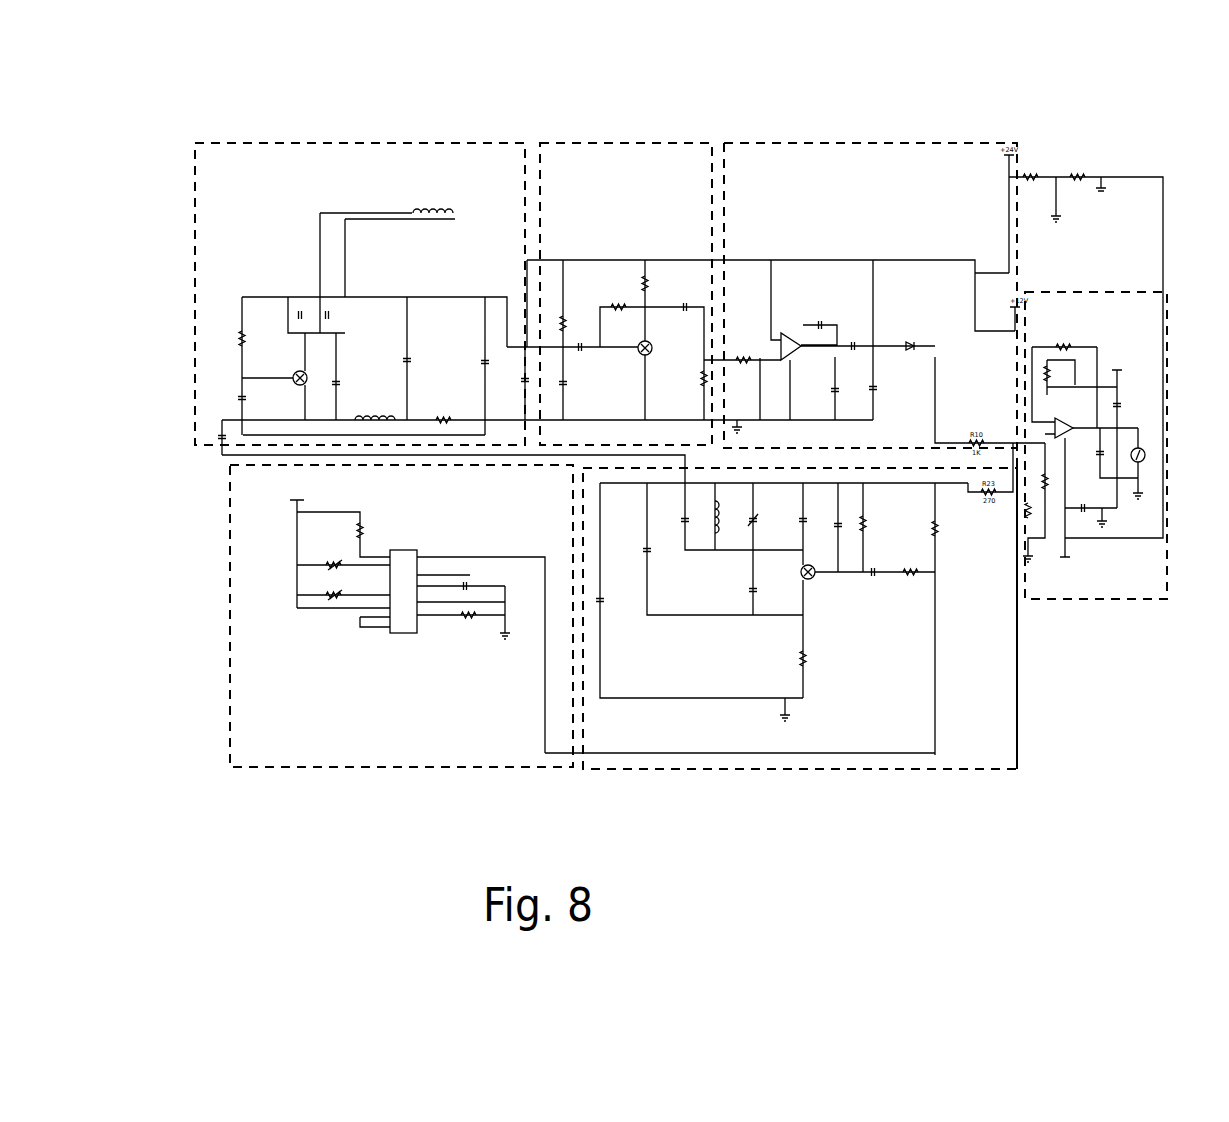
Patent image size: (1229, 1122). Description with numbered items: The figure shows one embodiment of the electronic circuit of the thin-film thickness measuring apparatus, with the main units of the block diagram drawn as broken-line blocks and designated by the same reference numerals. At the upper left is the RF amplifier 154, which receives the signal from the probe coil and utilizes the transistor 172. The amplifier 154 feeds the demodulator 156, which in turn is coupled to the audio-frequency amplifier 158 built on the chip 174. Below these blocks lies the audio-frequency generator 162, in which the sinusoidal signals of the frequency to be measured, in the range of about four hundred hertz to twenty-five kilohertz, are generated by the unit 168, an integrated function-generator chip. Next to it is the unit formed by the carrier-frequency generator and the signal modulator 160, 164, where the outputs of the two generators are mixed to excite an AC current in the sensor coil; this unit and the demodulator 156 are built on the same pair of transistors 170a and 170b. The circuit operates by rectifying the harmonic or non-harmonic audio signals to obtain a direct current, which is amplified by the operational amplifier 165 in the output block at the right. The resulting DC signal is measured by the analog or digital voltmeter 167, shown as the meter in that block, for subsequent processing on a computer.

The amplifier 154 is at (396, 261).
The demodulator 156 is at (660, 252).
The audio-frequency amplifier 158 is at (870, 398).
The carrier-frequency generator 160 is at (800, 669).
The signal modulator 164 is at (800, 669).
The audio-frequency generator 162 is at (348, 617).
The amplifier 165 is at (1068, 440).
The voltmeter 167 is at (1110, 433).
The unit 168 is at (405, 617).
The transistor 170a is at (655, 345).
The transistor 170b is at (813, 585).
The transistor 172 is at (317, 372).
The chip 174 is at (800, 313).